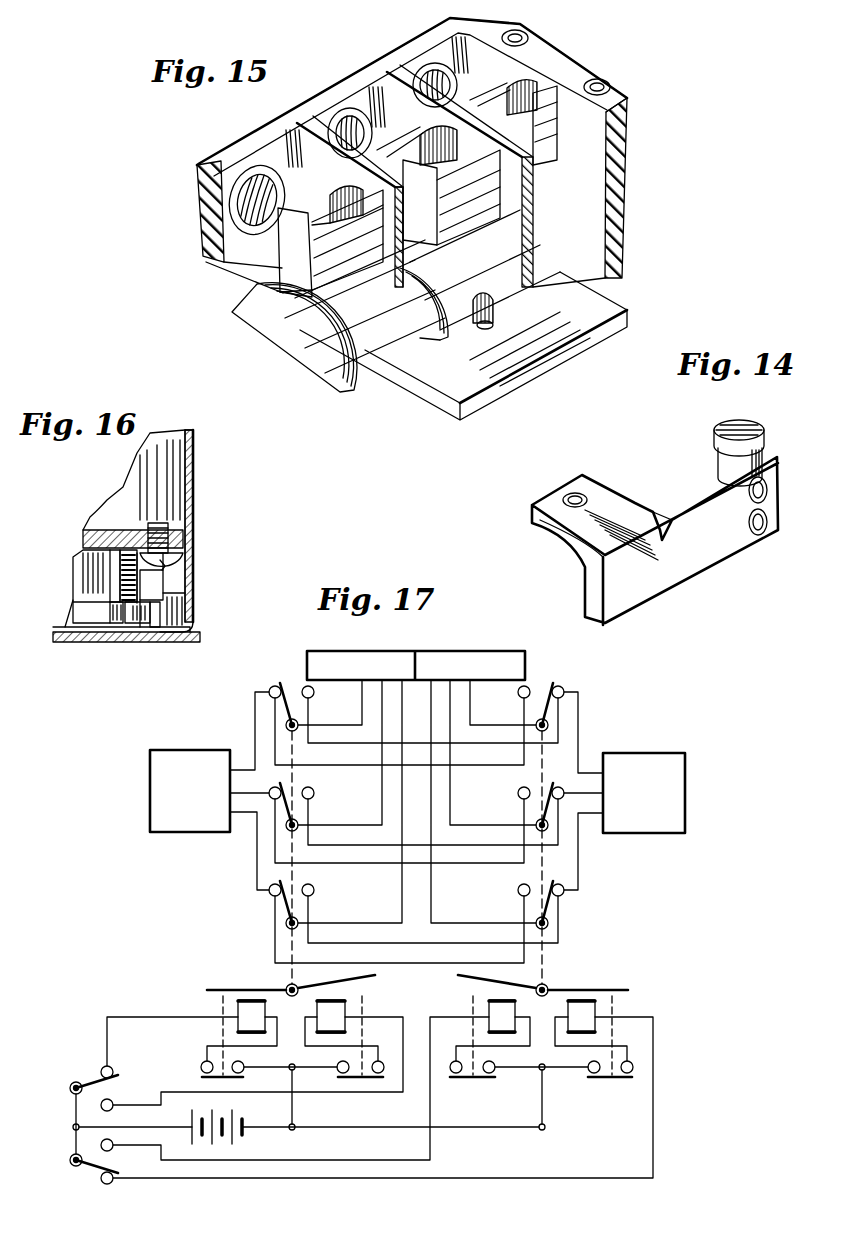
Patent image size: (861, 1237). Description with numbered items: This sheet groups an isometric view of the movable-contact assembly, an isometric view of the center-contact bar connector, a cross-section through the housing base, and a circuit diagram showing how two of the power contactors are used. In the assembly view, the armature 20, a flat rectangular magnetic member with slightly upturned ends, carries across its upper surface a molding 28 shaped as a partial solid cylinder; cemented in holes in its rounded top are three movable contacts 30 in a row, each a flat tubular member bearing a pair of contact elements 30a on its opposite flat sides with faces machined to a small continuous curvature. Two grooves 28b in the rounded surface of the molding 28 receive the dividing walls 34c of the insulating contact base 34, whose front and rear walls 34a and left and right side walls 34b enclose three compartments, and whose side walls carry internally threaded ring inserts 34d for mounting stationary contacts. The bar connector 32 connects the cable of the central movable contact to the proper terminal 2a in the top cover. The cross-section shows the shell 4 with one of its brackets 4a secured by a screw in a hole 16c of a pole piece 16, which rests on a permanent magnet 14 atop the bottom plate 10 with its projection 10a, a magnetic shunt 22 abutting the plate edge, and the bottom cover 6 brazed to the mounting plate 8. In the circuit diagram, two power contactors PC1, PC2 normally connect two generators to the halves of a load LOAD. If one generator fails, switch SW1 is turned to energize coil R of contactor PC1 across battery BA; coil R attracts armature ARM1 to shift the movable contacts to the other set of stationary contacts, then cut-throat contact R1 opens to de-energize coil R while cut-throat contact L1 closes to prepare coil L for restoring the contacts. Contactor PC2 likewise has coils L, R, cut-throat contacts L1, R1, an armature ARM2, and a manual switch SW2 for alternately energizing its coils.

In FIG. 15, the contact base 34 is at (198, 218).
In FIG. 15, the front and rear walls 34a is at (583, 62).
In FIG. 15, the left and right side walls 34b is at (388, 52).
In FIG. 15, the dividing walls 34c is at (508, 217).
In FIG. 15, the internally threaded ring inserts 34d is at (243, 178).
In FIG. 15, the movable contacts 30 is at (300, 292).
In FIG. 15, the contact elements 30a is at (322, 258).
In FIG. 15, the molding 28 is at (290, 350).
In FIG. 15, the grooves 28b is at (430, 346).
In FIG. 15, the armature 20 is at (540, 368).
In FIG. 14, the bar connector 32 is at (660, 588).
In FIG. 14, the terminal 2a is at (717, 455).
In FIG. 16, the shell 4 is at (195, 460).
In FIG. 16, the brackets 4a is at (185, 562).
In FIG. 16, the pole pieces 16 is at (83, 540).
In FIG. 16, the holes 16c is at (150, 528).
In FIG. 16, the permanent magnets 14 is at (142, 587).
In FIG. 16, the bottom plate 10 is at (73, 615).
In FIG. 16, the forward and rearward projections 10a is at (122, 625).
In FIG. 16, the magnetic shunts 22 is at (157, 627).
In FIG. 16, the bottom cover 6 is at (193, 620).
In FIG. 16, the mounting plate 8 is at (65, 645).
In FIG. 17, the load LOAD is at (416, 665).
In FIG. 17, the power contactor PC1 is at (277, 969).
In FIG. 17, the power contactor PC2 is at (600, 969).
In FIG. 17, the armature ARM1 is at (207, 988).
In FIG. 17, the armature ARM2 is at (617, 988).
In FIG. 17, the coil L is at (376, 1016).
In FIG. 17, the coil R is at (456, 1016).
In FIG. 17, the cut-throat contact L1 is at (202, 1076).
In FIG. 17, the cut-throat contact R1 is at (337, 1076).
In FIG. 17, the switch SW1 is at (72, 1084).
In FIG. 17, the switch SW2 is at (76, 1166).
In FIG. 17, the battery BA is at (240, 1140).